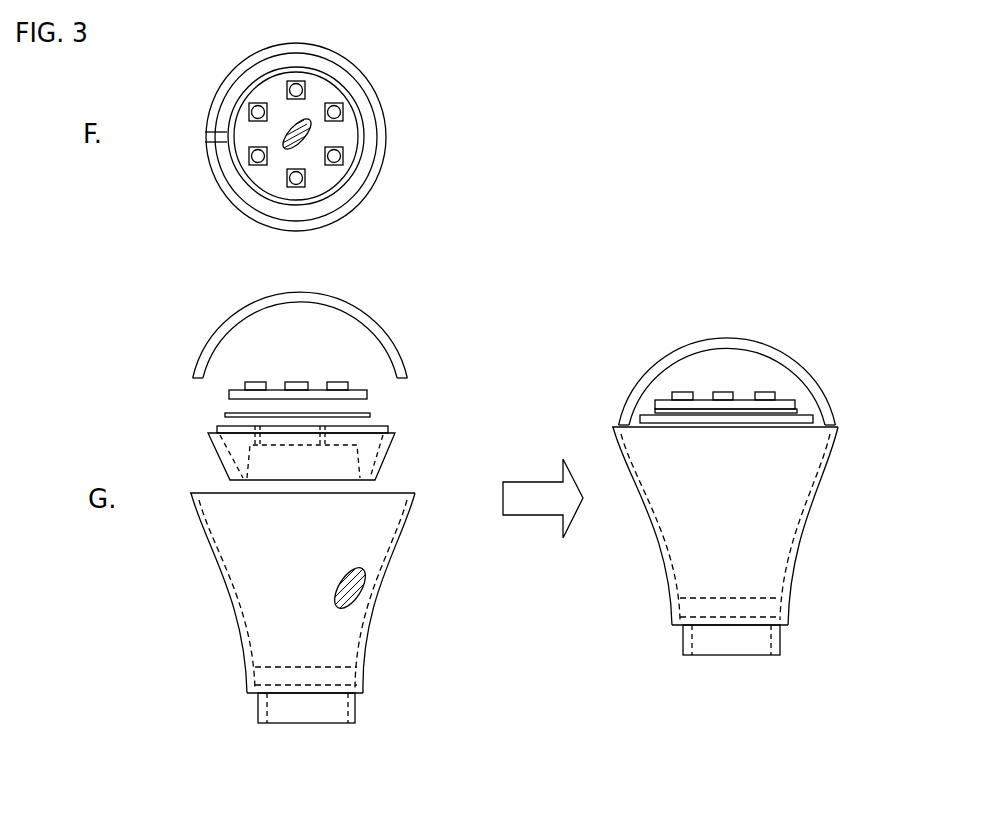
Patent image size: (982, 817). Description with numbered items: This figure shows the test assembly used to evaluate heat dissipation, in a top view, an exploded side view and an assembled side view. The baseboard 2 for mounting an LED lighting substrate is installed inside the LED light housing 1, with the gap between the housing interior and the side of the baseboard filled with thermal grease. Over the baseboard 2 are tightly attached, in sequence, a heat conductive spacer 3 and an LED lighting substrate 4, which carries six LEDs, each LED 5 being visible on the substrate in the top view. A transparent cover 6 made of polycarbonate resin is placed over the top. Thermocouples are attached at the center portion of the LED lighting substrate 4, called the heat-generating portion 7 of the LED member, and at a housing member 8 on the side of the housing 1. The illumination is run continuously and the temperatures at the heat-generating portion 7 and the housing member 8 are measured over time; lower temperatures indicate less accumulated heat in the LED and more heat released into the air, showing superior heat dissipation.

The LED light housing 1 is at (416, 513).
The baseboard for mounting an LED lighting substrate 2 is at (387, 92).
The heat conductive spacer 3 is at (374, 115).
The LED lighting substrate 4 is at (361, 137).
The LED 5 is at (346, 158).
The transparent cover 6 is at (409, 342).
The heat-generating portion of an LED member 7 is at (308, 118).
The housing member 8 is at (361, 588).